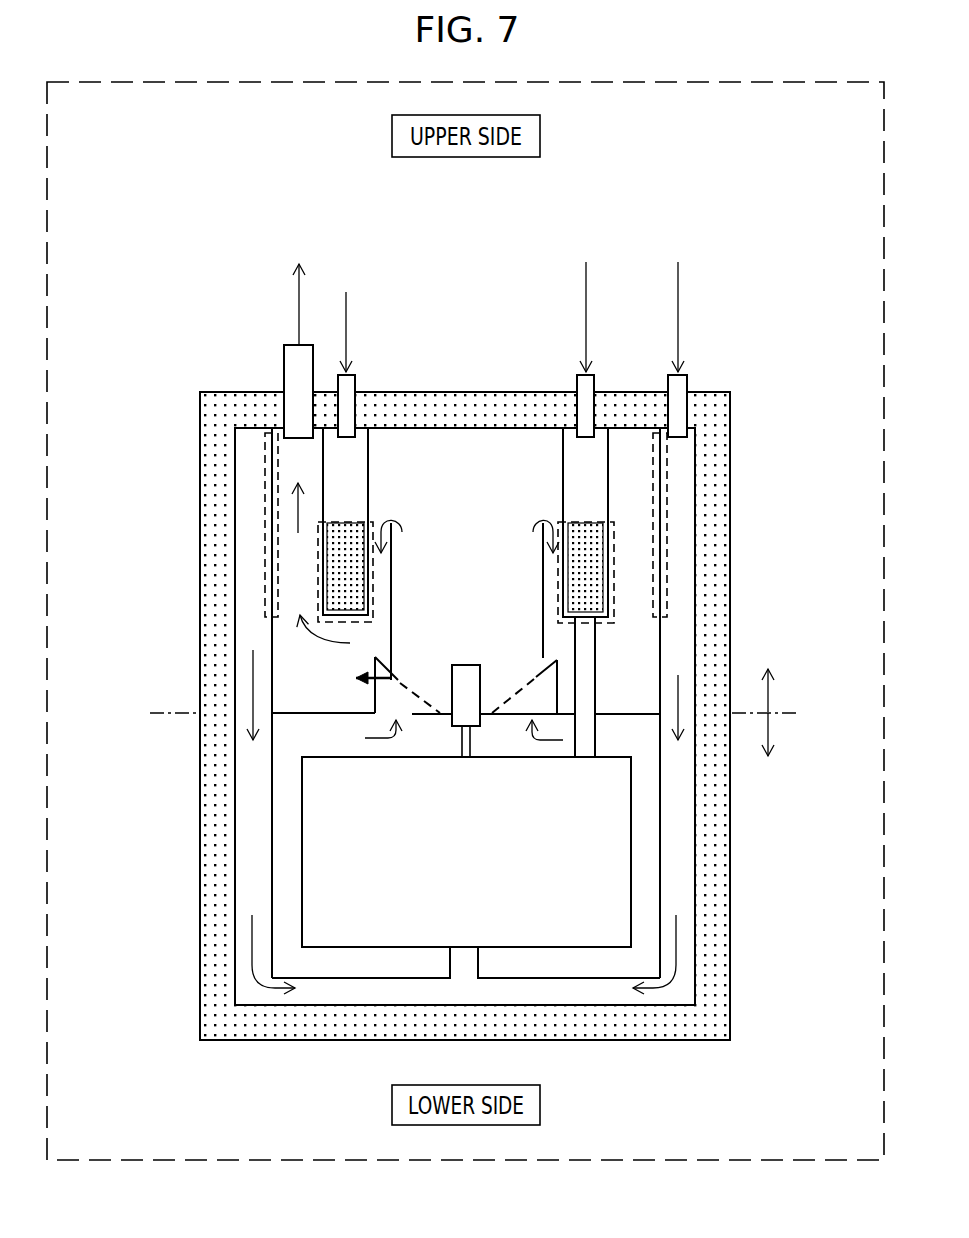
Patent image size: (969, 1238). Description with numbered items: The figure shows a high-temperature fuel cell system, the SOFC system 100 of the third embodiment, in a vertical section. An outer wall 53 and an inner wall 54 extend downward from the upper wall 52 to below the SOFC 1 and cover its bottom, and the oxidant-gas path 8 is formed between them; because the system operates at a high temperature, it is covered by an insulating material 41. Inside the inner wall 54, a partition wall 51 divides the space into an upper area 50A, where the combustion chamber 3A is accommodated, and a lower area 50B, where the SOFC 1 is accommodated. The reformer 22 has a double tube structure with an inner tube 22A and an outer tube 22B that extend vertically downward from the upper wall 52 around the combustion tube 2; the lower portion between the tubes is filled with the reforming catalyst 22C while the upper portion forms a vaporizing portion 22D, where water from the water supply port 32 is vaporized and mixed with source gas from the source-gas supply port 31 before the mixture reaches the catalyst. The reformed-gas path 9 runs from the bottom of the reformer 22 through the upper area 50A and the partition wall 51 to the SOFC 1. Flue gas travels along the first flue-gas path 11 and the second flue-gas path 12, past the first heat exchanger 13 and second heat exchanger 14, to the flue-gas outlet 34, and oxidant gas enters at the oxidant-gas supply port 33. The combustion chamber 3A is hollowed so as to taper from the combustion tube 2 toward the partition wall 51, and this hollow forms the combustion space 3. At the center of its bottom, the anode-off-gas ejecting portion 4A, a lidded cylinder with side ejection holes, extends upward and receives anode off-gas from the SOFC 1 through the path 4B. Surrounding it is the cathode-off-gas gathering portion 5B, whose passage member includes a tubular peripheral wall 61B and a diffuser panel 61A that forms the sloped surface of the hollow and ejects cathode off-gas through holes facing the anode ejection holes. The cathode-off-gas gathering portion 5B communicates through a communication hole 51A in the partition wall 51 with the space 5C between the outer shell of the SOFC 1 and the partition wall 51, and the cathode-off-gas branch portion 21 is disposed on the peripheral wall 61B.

The SOFC system 100 is at (497, 203).
The SOFC 1 is at (473, 845).
The combustion tube 2 is at (427, 434).
The combustion space 3 is at (474, 652).
The combustion chamber 3A is at (546, 650).
The anode-off-gas ejecting portion 4A is at (543, 607).
The path 4B is at (471, 740).
The cathode-off-gas gathering portion 5B is at (404, 706).
The space 5C is at (356, 750).
The oxidant-gas path 8 is at (687, 668).
The reformed-gas path 9 is at (598, 702).
The first flue-gas path 11 is at (381, 530).
The second flue-gas path 12 is at (311, 585).
The first heat exchanger 13 is at (265, 505).
The second heat exchanger 14 is at (318, 545).
The cathode-off-gas branch portion 21 is at (374, 658).
The reformer 22 is at (321, 473).
The inner tube 22A is at (563, 487).
The outer tube 22B is at (608, 480).
The reforming catalyst 22C is at (602, 587).
The vaporizing portion 22D is at (602, 502).
The source-gas supply port 31 is at (576, 383).
The water supply port 32 is at (356, 382).
The oxidant-gas supply port 33 is at (688, 383).
The flue-gas outlet 34 is at (283, 384).
The insulating material 41 is at (230, 780).
The upper area 50A is at (475, 675).
The lower area 50B is at (765, 753).
The partition wall 51 is at (622, 712).
The communication hole 51A is at (412, 714).
The upper wall 52 is at (480, 410).
The outer wall 53 is at (697, 540).
The inner wall 54 is at (658, 540).
The diffuser panel 61A is at (391, 607).
The peripheral wall 61B is at (338, 685).